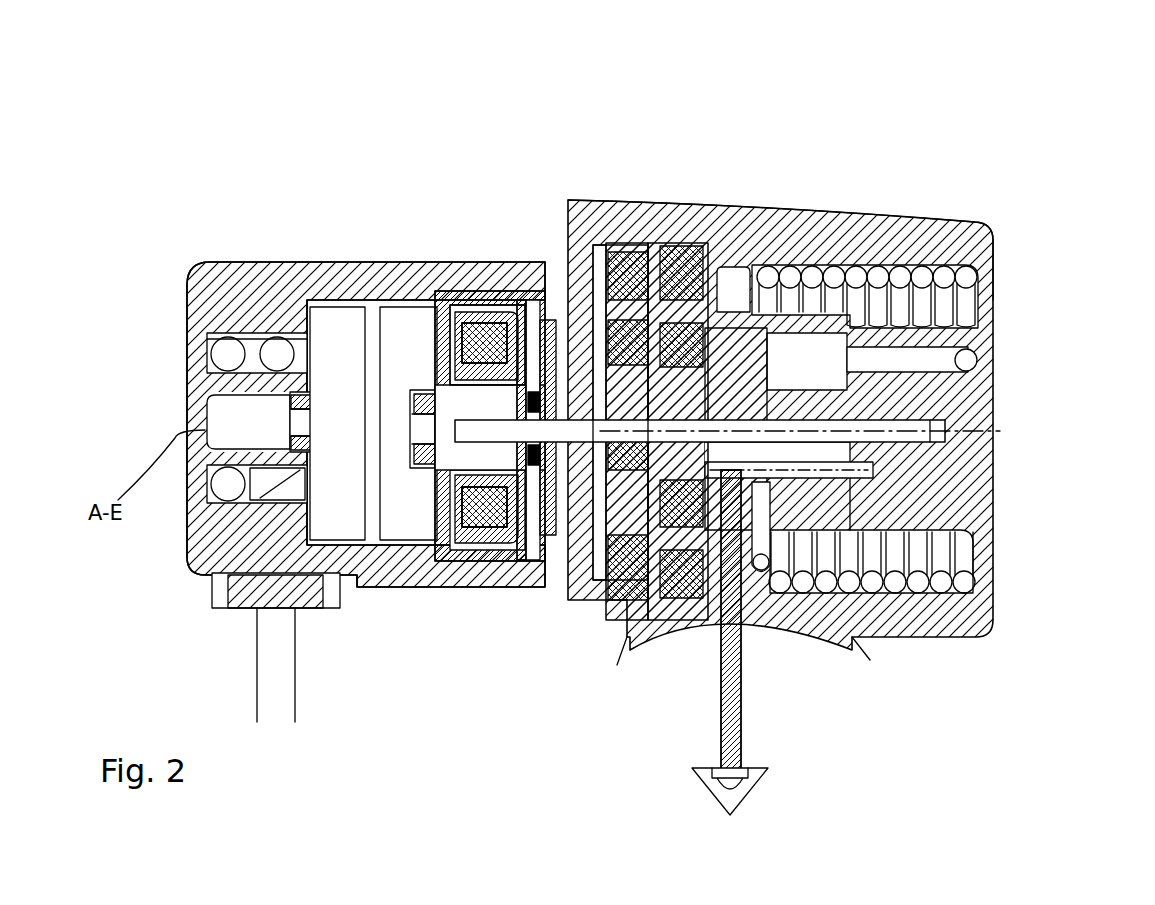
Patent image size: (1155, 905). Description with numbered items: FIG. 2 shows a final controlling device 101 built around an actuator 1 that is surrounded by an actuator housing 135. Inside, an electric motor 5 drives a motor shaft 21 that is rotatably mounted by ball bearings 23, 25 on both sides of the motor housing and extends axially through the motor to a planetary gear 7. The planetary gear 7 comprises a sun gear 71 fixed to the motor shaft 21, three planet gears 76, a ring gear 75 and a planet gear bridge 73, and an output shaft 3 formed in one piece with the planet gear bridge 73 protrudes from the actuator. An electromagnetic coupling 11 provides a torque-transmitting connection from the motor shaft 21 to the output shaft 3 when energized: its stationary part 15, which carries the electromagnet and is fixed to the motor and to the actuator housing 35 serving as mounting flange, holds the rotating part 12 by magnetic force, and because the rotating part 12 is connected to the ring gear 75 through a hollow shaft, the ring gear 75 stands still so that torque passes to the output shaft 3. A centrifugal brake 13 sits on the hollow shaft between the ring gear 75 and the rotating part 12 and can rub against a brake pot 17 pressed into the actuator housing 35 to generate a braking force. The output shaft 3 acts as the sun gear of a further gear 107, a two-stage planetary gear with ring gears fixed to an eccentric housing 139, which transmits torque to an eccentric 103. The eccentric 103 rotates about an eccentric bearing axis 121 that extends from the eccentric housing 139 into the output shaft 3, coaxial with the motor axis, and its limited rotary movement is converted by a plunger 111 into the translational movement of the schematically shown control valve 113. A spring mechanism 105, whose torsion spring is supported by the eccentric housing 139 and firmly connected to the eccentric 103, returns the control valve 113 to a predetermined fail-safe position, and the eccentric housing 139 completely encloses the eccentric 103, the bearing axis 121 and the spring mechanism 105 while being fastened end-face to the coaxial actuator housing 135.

The actuator 1 is at (372, 224).
The output shaft 3 is at (568, 250).
The electric motor 5 is at (334, 330).
The planetary gear 7 is at (600, 600).
The electromagnetic coupling 11 is at (485, 590).
The rotating part 12 is at (495, 588).
The centrifugal brake 13 is at (542, 292).
The stationary part 15 is at (448, 560).
The brake pot 17 is at (520, 600).
The motor shaft 21 is at (300, 425).
The ball bearing 23 is at (428, 470).
The ball bearing 25 is at (318, 458).
The actuator housing 35 is at (470, 560).
The sun gear 71 is at (522, 300).
The planet gear bridge 73 is at (620, 412).
The ring gear 75 is at (602, 300).
The planet gear 76 is at (596, 560).
The final controlling device 101 is at (846, 420).
The eccentric 103 is at (812, 490).
The spring mechanism 105 is at (952, 552).
The further gear 107 is at (657, 203).
The plunger 111 is at (865, 640).
The control valve 113 is at (735, 798).
The eccentric bearing axis 121 is at (938, 412).
The actuator housing 135 is at (190, 290).
The eccentric housing 139 is at (978, 235).